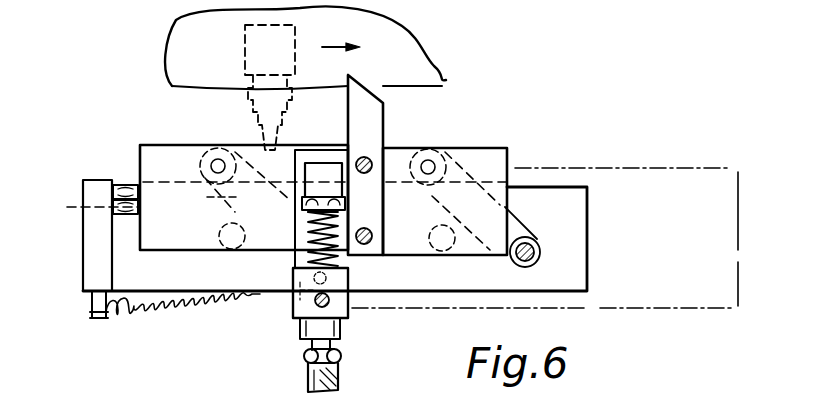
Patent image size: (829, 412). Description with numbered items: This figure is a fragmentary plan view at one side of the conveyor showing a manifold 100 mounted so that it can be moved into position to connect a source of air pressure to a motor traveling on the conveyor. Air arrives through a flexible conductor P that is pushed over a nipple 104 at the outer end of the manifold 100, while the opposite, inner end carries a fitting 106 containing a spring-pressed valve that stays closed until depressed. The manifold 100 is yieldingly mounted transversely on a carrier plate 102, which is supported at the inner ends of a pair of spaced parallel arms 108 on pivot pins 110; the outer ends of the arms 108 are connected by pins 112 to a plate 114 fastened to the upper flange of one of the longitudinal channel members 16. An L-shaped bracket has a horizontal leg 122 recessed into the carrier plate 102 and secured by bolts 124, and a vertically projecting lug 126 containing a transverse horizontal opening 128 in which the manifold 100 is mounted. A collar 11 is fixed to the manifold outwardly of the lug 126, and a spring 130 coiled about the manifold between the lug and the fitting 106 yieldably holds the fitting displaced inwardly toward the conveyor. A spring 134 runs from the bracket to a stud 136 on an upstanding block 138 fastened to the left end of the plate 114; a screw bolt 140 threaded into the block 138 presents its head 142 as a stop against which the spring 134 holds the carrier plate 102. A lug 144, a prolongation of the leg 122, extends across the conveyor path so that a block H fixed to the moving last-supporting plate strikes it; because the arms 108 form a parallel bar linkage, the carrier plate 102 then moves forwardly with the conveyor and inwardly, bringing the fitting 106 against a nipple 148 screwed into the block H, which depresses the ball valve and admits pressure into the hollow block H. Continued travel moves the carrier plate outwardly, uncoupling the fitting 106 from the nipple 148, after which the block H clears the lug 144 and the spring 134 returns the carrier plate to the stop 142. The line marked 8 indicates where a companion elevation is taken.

The block H is at (245, 42).
The section line 8— 8 is at (475, 113).
The collar 11 is at (310, 343).
The longitudinal channel member 16 is at (722, 232).
The flexible conductor P is at (340, 362).
The manifold 100 is at (338, 217).
The carrier plate 102 is at (490, 254).
The nipple 104 is at (302, 382).
The fitting 106 is at (316, 176).
The arms 108 is at (197, 196).
The pivot pins 110 is at (431, 165).
The pins 112 is at (546, 246).
The plate 114 is at (584, 233).
The horizontal leg 122 is at (302, 206).
The bolts 124 is at (364, 246).
The lug 126 is at (348, 312).
The horizontal opening 128 is at (292, 307).
The spring 130 is at (290, 248).
The spring 134 is at (163, 312).
The stud 136 is at (92, 296).
The upstanding block 138 is at (97, 252).
The screw bolt 140 is at (76, 207).
The head 142 is at (132, 185).
The lug 144 is at (358, 120).
The nipple 148 is at (262, 133).